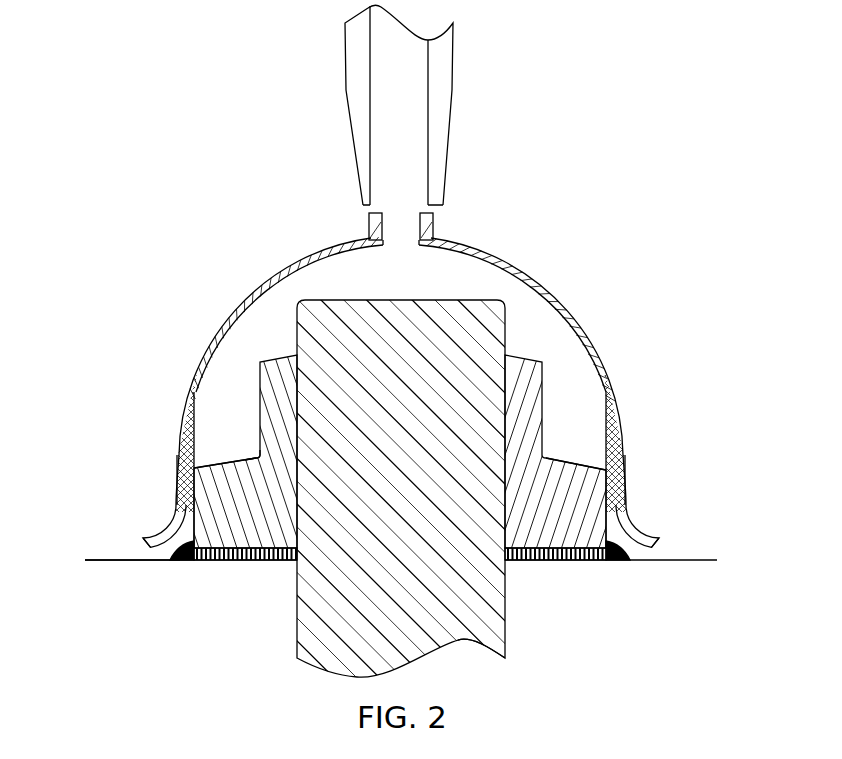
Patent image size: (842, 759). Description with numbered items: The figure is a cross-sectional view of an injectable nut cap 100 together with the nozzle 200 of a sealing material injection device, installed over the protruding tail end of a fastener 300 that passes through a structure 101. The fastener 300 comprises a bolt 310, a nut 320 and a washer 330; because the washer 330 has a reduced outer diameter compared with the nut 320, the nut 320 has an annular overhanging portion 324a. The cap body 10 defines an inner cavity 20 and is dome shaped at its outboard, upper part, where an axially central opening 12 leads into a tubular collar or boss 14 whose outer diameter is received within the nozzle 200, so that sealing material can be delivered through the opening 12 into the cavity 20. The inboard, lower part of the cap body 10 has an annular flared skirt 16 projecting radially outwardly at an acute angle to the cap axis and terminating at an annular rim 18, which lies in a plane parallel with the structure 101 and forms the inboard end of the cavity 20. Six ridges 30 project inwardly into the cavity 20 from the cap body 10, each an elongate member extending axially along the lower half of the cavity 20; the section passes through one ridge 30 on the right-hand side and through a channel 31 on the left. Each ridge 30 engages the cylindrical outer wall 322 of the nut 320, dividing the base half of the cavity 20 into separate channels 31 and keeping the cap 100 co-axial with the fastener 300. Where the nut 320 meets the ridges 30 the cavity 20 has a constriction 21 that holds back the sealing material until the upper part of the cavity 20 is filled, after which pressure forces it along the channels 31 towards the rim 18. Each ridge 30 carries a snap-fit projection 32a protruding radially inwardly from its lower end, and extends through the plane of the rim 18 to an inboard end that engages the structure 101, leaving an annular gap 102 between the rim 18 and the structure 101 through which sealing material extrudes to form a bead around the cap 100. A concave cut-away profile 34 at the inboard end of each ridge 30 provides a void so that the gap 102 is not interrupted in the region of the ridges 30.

The nozzle 200 is at (480, 101).
The injectable nut cap 100 is at (404, 367).
The cap body 10 is at (588, 328).
The inner cavity 20 is at (260, 318).
The central opening 12 is at (397, 240).
The tubular collar or boss 14 is at (432, 226).
The constriction 21 is at (587, 443).
The ridge 30 is at (180, 436).
The channel 31 is at (198, 463).
The cylindrical outer wall 322 is at (178, 490).
The annular flared skirt 16 is at (163, 524).
The annular rim 18 is at (142, 540).
The structure 101 is at (97, 558).
The annular gap 102 is at (147, 553).
The snap-fit projection 32a is at (178, 557).
The concave cut-away profile 34 is at (630, 542).
The annular overhanging portion 324a is at (193, 562).
The washer 330 is at (578, 562).
The nut 320 is at (405, 502).
The fastener 300 is at (421, 498).
The bolt 310 is at (493, 633).